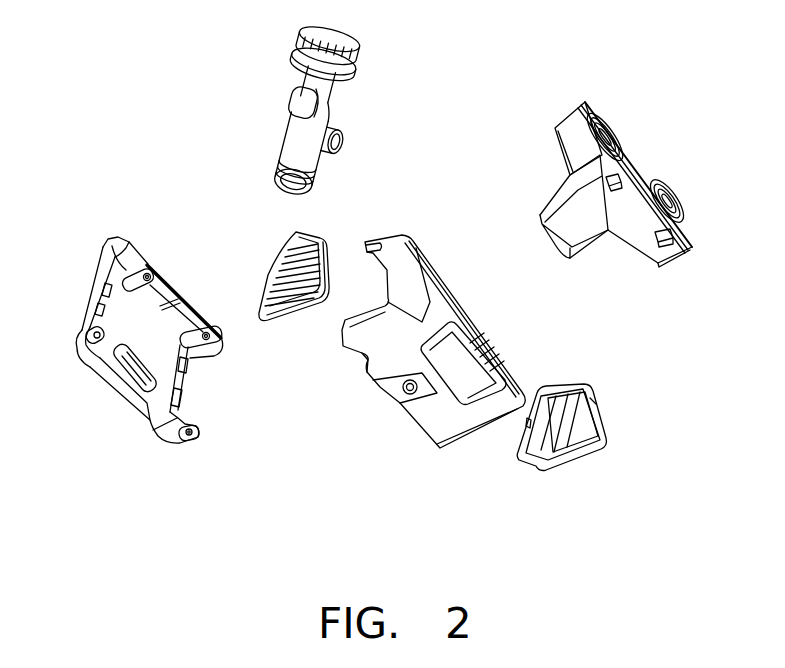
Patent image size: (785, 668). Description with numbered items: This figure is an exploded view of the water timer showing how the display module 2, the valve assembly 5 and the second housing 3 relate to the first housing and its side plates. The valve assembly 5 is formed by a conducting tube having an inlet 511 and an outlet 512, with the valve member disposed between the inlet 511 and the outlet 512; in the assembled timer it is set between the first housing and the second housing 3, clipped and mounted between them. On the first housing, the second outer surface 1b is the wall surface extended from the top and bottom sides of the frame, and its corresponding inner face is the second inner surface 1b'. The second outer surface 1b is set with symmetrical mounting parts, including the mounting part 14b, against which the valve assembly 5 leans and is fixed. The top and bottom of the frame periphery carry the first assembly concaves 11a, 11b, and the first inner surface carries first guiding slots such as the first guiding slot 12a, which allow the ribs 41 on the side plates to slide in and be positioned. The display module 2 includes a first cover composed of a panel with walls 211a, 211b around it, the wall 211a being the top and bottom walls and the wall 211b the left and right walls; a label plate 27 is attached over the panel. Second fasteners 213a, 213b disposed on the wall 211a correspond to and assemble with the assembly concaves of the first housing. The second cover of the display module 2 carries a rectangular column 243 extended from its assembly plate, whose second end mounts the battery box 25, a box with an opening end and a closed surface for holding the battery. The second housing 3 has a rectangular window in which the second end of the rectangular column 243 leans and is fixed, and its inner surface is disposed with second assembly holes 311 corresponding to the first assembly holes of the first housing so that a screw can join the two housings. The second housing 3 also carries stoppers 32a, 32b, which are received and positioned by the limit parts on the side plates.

The valve assembly 5 is at (284, 80).
The inlet 511 is at (362, 42).
The outlet 512 is at (274, 192).
The display module 2 is at (676, 154).
The wall 211b is at (572, 130).
The wall 211a is at (652, 255).
The rectangular column 243 is at (565, 195).
The battery box 25 is at (557, 255).
The label plate 27 is at (688, 226).
The second fastener 213a is at (612, 188).
The second fastener 213b is at (688, 250).
The second outer surface 1b is at (432, 336).
The second inner surface 1b' is at (439, 285).
The first assembly concave 11a is at (441, 253).
The first assembly concave 11b is at (490, 322).
The first guiding slot 12a is at (368, 256).
The mounting part 14b is at (364, 358).
The rib 41 is at (290, 312).
The second housing 3 is at (56, 377).
The second assembly hole 311 is at (165, 277).
The stopper 32a is at (97, 314).
The stopper 32b is at (183, 402).